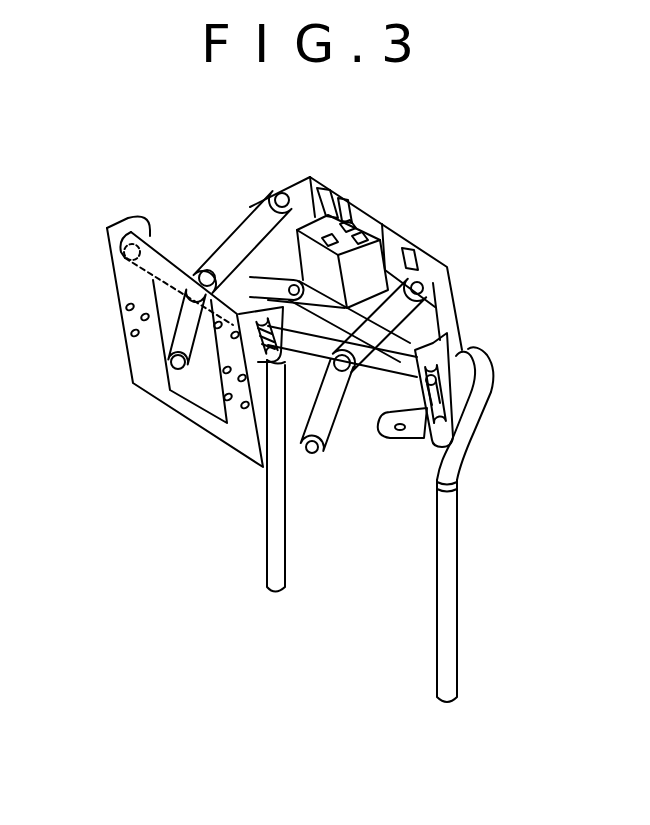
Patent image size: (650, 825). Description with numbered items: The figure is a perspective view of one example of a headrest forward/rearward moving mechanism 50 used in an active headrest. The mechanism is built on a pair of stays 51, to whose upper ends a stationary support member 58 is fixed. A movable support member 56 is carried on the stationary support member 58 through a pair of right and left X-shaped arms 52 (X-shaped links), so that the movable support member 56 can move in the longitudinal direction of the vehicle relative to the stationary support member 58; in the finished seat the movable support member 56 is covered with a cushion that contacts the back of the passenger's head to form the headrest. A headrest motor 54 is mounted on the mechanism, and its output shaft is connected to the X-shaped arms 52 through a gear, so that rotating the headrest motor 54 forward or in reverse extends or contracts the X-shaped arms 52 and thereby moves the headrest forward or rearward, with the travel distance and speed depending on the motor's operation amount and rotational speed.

The headrest forward/rearward moving mechanism 50 is at (173, 445).
The stays 51 is at (457, 447).
The X-shaped arms 52 is at (226, 240).
The headrest motor 54 is at (352, 226).
The movable support member 56 is at (140, 362).
The stationary support member 58 is at (447, 307).